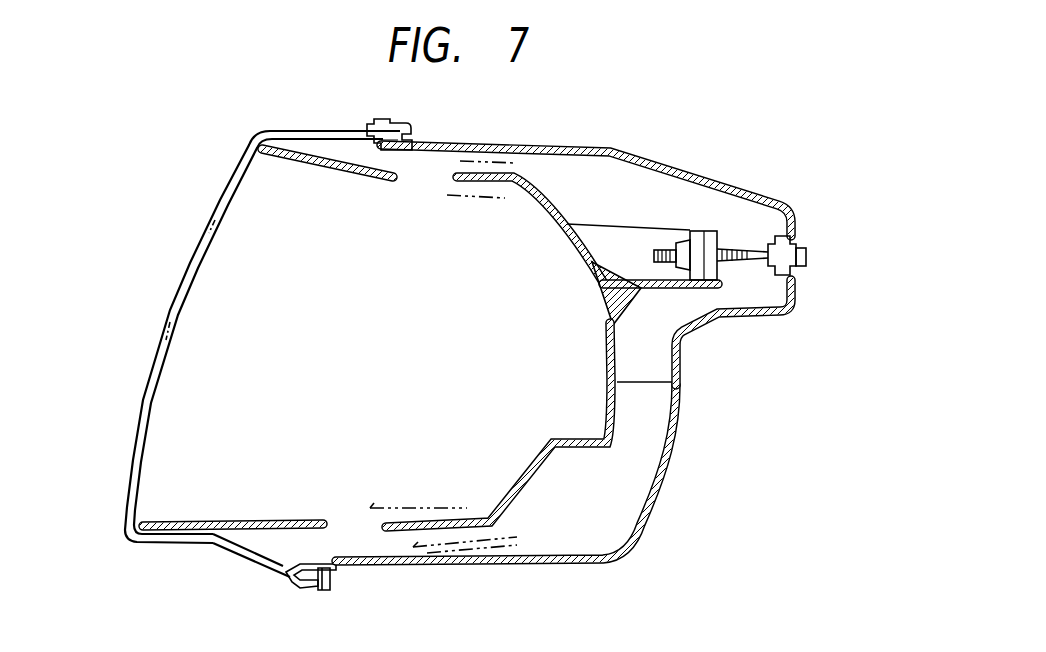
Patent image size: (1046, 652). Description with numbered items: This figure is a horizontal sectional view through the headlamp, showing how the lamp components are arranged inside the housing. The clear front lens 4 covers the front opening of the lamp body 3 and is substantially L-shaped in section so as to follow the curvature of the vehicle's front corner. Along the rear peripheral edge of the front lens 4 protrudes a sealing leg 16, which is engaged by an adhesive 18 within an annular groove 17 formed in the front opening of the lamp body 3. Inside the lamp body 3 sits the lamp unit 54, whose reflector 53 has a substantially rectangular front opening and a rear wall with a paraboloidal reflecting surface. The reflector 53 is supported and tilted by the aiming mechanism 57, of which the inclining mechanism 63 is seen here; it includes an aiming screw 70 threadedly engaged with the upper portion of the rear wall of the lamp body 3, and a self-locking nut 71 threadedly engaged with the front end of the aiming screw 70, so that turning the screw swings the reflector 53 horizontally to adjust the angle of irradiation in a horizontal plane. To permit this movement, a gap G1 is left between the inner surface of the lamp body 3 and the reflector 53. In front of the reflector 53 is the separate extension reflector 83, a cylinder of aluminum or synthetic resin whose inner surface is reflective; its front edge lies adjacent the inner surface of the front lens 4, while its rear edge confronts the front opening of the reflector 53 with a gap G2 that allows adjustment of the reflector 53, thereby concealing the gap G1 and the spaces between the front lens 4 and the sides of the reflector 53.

The front lens 4 is at (199, 223).
The lamp body 3 is at (592, 150).
The extension reflector 83 is at (345, 154).
The aiming mechanism 57 is at (733, 224).
The self-locking nut 71 is at (684, 232).
The aiming screw 70 is at (799, 242).
The inclining mechanism 63 is at (751, 298).
The lamp unit 54 is at (606, 337).
The reflector 53 is at (624, 414).
The sealing leg 16 is at (227, 554).
The annular groove 17 is at (284, 573).
The adhesive 18 is at (324, 592).
The gap G1 is at (370, 550).
The gap G2 is at (342, 520).